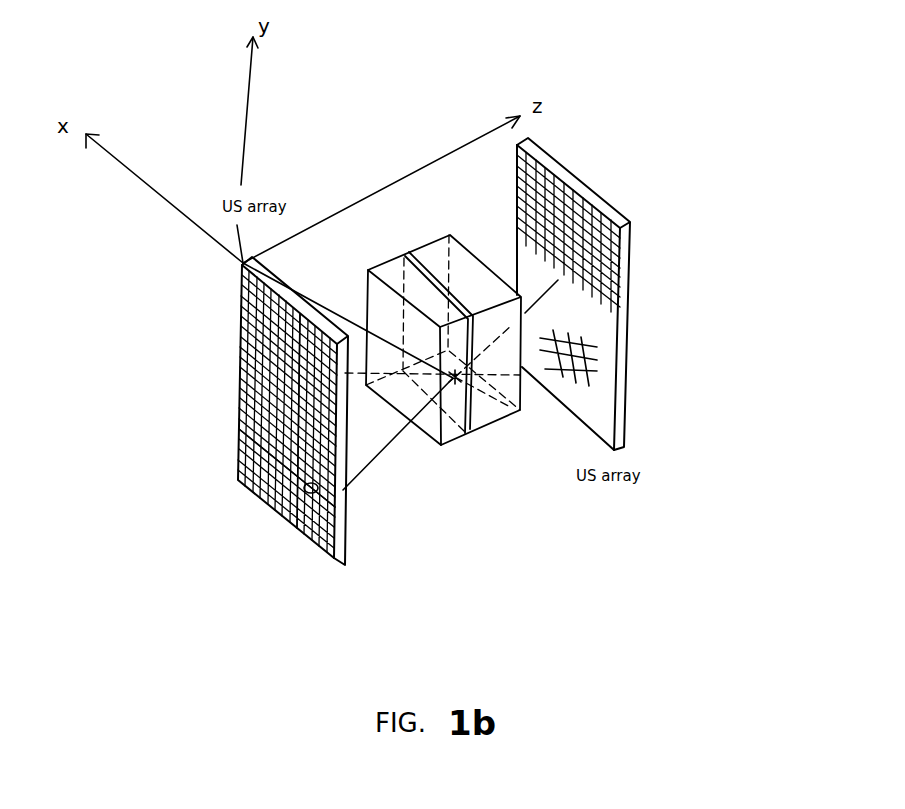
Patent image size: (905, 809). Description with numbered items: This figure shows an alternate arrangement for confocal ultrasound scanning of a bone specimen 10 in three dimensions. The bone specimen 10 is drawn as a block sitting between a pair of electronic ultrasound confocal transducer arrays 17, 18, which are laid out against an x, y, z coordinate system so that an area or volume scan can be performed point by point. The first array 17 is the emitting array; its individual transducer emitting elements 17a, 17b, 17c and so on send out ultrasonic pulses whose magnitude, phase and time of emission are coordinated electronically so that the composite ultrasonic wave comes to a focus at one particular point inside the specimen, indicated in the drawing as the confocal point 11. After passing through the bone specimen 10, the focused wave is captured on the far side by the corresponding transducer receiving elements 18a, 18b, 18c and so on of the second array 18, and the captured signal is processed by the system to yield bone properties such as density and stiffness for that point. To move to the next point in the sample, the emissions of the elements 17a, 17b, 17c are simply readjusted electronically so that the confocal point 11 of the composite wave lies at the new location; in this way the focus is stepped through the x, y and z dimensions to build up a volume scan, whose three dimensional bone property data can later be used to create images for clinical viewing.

The bone specimen 10 is at (505, 415).
The focal point 11 is at (453, 378).
The ultrasound confocal transducer array 17 is at (170, 298).
The transducer emitting element 17a is at (327, 489).
The transducer emitting element 17b is at (320, 493).
The transducer emitting element 17c is at (303, 487).
The ultrasound confocal transducer array 18 is at (668, 188).
The transducer receiving element 18a is at (588, 360).
The transducer receiving element 18b is at (582, 355).
The transducer receiving element 18c is at (565, 342).